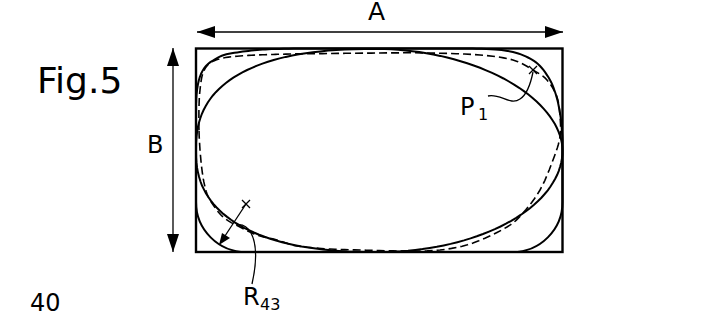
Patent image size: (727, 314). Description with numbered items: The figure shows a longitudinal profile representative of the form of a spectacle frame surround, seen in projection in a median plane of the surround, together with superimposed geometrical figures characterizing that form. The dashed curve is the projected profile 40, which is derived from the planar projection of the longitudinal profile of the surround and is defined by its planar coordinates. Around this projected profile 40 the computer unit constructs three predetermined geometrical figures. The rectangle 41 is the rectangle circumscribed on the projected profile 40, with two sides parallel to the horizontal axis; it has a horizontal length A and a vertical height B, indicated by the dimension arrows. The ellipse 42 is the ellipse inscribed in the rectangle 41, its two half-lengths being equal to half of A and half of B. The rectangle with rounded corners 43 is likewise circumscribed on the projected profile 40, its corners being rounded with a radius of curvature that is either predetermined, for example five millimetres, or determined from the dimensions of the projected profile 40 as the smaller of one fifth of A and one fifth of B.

The projected profile 40 is at (553, 163).
The rectangle 41 is at (565, 235).
The ellipse 42 is at (547, 192).
The rectangle with rounded corners 43 is at (547, 238).